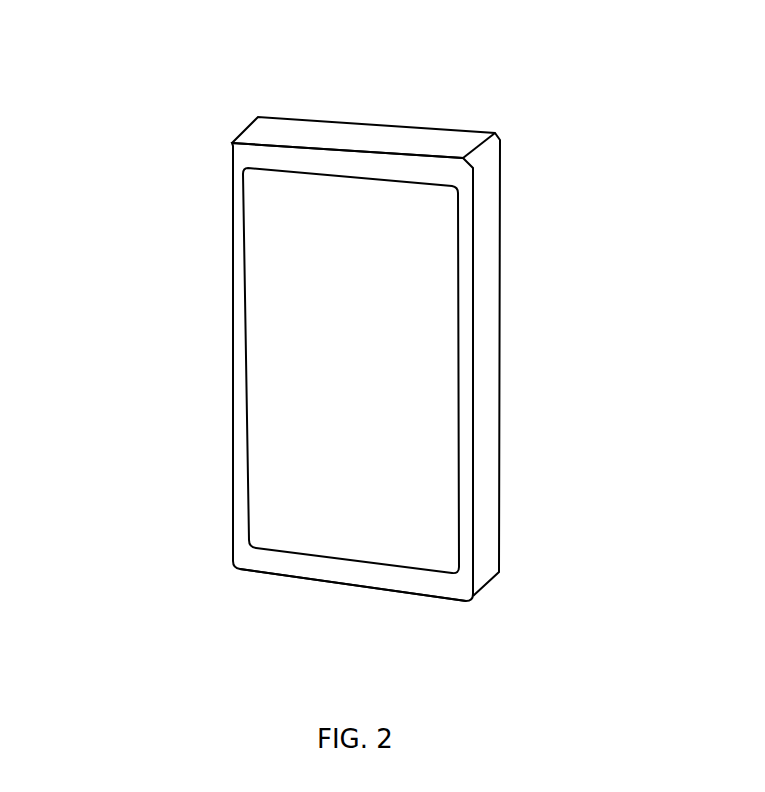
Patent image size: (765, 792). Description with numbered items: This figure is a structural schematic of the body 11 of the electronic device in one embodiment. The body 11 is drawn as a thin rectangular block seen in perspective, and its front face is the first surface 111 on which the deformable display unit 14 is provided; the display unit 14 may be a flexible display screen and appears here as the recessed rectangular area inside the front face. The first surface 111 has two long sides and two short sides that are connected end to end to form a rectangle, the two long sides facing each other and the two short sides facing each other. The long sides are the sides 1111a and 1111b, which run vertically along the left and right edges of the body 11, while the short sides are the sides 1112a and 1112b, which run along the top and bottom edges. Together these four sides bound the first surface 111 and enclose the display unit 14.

The body 11 is at (350, 372).
The first surface 111 is at (350, 372).
The side 1111a is at (230, 535).
The side 1111b is at (475, 408).
The side 1112a is at (350, 148).
The side 1112b is at (333, 587).
The display unit 14 is at (268, 418).